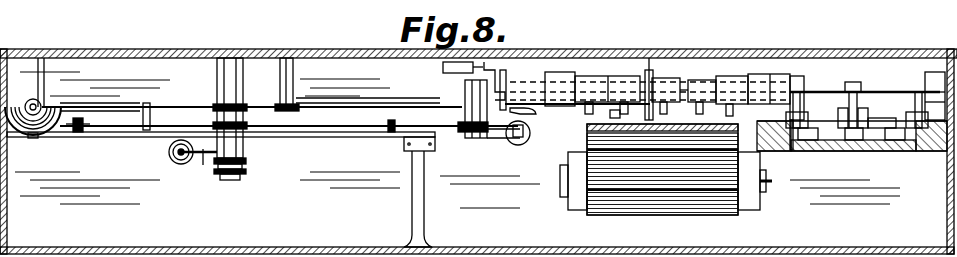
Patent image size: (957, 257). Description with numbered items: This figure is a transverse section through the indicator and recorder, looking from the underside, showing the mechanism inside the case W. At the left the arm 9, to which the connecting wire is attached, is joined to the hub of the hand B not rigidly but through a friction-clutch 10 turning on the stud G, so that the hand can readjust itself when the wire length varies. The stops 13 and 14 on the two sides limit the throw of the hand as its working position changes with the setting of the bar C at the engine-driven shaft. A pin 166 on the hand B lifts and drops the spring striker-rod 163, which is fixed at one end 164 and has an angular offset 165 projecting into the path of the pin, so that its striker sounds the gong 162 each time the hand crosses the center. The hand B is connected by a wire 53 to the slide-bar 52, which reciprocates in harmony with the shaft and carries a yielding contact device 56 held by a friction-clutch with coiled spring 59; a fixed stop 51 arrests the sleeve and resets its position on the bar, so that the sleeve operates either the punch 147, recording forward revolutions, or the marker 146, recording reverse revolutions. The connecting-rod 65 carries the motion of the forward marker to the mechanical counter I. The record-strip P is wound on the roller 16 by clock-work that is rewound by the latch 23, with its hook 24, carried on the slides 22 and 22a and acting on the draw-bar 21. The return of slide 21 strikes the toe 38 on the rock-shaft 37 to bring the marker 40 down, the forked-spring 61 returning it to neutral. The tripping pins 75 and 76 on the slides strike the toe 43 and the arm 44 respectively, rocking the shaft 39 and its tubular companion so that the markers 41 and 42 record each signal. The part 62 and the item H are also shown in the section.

The arm 9 is at (203, 165).
The friction-clutch 10 is at (246, 148).
The stop 13 is at (78, 120).
The stop 14 is at (395, 123).
The roller 16 is at (590, 213).
The draw-bar 21 is at (852, 152).
The slide 22 is at (893, 152).
The slide-bar 22a is at (802, 152).
The latch-bar 23 is at (795, 152).
The hook 24 is at (880, 118).
The rock-shaft 37 is at (851, 82).
The toe 38 is at (840, 112).
The rock-shaft 39 is at (869, 90).
The marker 40 is at (687, 92).
The marker 41 is at (720, 94).
The marker 42 is at (745, 100).
The toe 43 is at (796, 86).
The arm 44 is at (920, 88).
The fixed stop 51 is at (535, 114).
The slide-bar 52 is at (518, 140).
The wire 53 is at (326, 113).
The contact device 56 is at (506, 140).
The coiled spring 59 is at (468, 134).
The forked-spring 61 is at (631, 114).
The bearing 62 is at (651, 66).
The connecting-rod 65 is at (494, 72).
The tripping pin 75 is at (800, 118).
The tripping pin 76 is at (910, 118).
The marker 146 is at (600, 90).
The punch 147 is at (572, 92).
The gong 162 is at (42, 134).
The striker-rod 163 is at (110, 104).
The fixed end 164 is at (300, 99).
The angular offset 165 is at (250, 106).
The pin 166 is at (155, 96).
The hand B is at (205, 128).
The bar C is at (320, 138).
The stud G is at (243, 178).
The hand wheel H is at (169, 155).
The mechanical counter I is at (442, 67).
The record-strip P is at (680, 186).
The case W is at (138, 246).